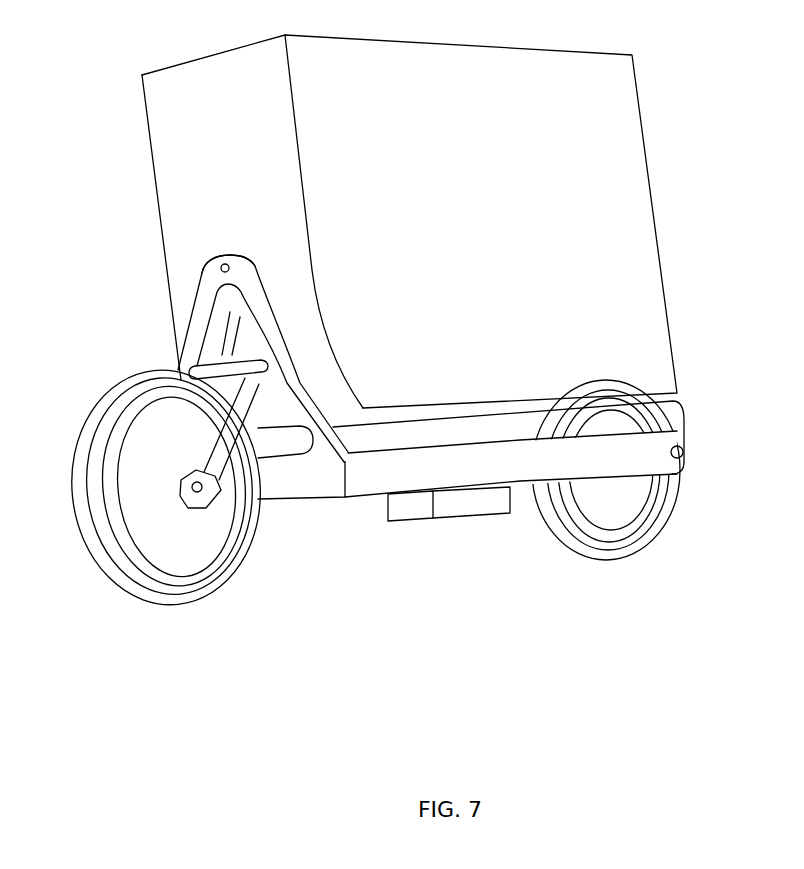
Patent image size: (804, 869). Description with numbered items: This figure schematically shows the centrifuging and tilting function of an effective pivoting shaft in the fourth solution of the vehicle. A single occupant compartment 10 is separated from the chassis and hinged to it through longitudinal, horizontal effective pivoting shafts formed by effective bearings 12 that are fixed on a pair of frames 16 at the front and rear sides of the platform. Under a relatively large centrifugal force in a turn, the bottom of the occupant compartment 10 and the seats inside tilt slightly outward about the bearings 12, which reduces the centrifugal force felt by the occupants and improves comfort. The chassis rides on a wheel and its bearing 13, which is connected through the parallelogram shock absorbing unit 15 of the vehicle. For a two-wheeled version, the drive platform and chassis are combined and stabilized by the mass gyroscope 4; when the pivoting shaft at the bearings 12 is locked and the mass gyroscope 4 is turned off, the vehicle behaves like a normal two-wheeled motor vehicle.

The single occupant compartment 10 is at (620, 203).
The effective bearing hinging the occupant compartment with the chassis 12 is at (210, 265).
The framing for hinging the occupant compartment with the chassis 16 is at (194, 313).
The wheel and bearing thereof 13 is at (109, 553).
The parallelogram shock absorbing unit of the vehicle 15 is at (221, 470).
The mass gyroscope 4 is at (420, 507).